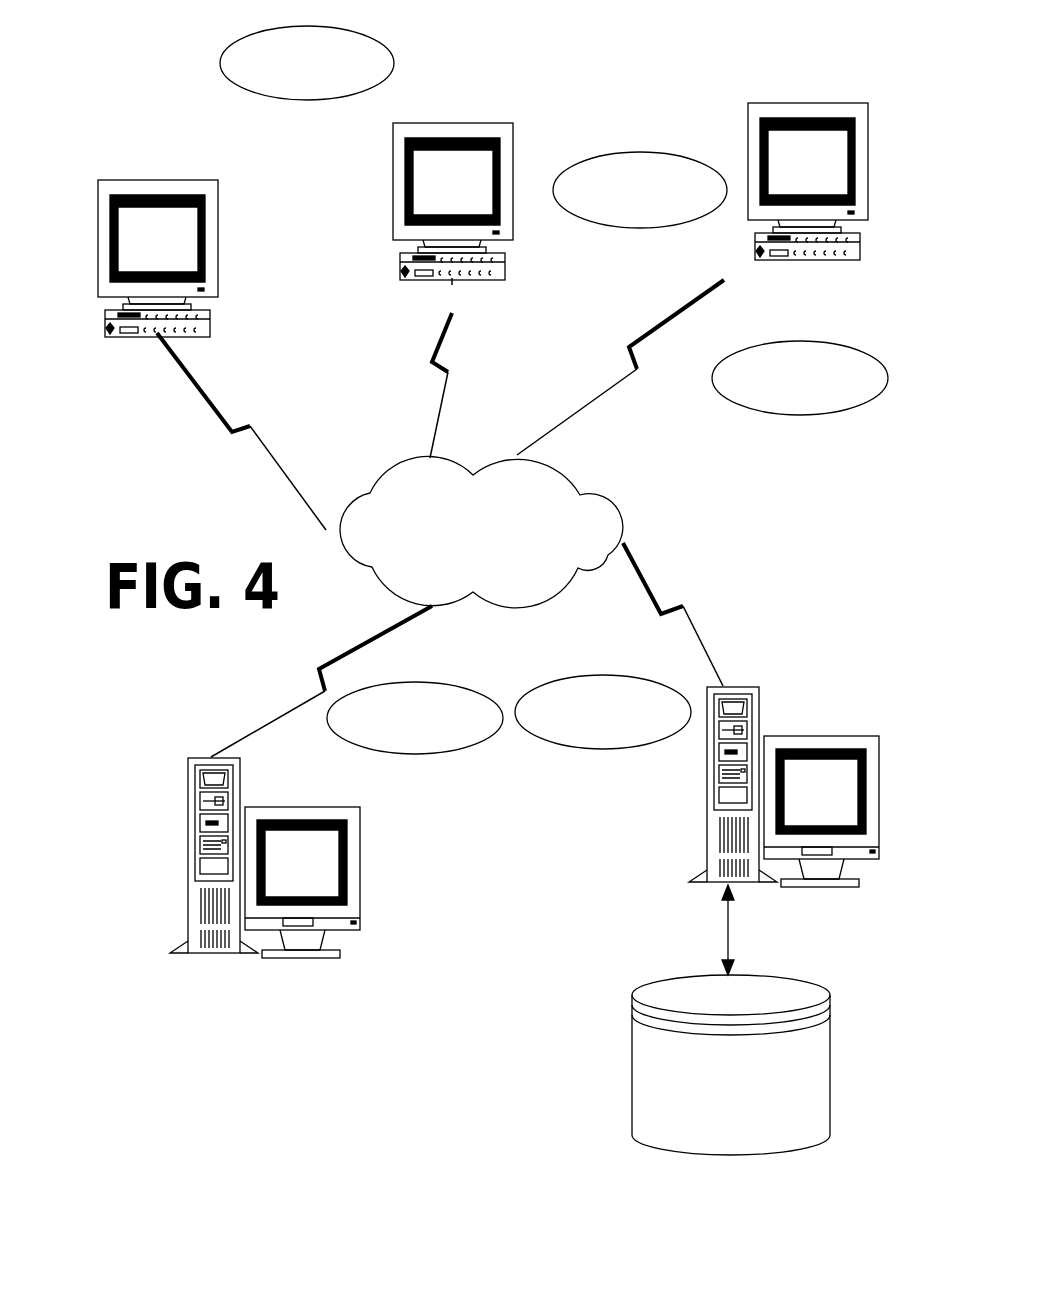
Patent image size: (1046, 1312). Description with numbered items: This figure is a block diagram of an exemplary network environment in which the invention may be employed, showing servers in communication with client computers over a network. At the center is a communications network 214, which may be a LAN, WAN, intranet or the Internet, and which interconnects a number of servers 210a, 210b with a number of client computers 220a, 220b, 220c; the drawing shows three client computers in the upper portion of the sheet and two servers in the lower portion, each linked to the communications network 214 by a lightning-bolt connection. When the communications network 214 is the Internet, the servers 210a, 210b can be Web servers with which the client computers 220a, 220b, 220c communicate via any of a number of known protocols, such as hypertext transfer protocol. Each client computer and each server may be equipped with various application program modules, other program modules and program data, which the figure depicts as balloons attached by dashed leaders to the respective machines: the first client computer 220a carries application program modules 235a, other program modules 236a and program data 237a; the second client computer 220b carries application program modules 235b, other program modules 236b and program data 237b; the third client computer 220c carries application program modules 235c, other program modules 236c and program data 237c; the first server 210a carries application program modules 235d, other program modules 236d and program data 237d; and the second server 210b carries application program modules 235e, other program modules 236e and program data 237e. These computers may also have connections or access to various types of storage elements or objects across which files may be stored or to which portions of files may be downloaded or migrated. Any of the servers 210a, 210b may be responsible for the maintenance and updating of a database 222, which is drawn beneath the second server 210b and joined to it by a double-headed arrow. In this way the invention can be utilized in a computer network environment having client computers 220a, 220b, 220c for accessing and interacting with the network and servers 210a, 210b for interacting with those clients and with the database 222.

The communications network 214 is at (550, 470).
The client computer 220a is at (158, 180).
The client computer 220b is at (455, 122).
The client computer 220c is at (807, 103).
The server 210a is at (362, 855).
The server 210b is at (823, 735).
The database 222 is at (731, 1020).
The application program modules 235a is at (303, 174).
The other program modules 236a is at (303, 174).
The program data 237a is at (213, 322).
The application program modules 235b is at (616, 207).
The other program modules 236b is at (616, 207).
The program data 237b is at (505, 262).
The application program modules 235c is at (800, 336).
The other program modules 236c is at (800, 336).
The program data 237c is at (858, 258).
The application program modules 235d is at (371, 733).
The other program modules 236d is at (371, 733).
The program data 237d is at (240, 784).
The application program modules 235e is at (611, 718).
The other program modules 236e is at (611, 718).
The program data 237e is at (707, 761).